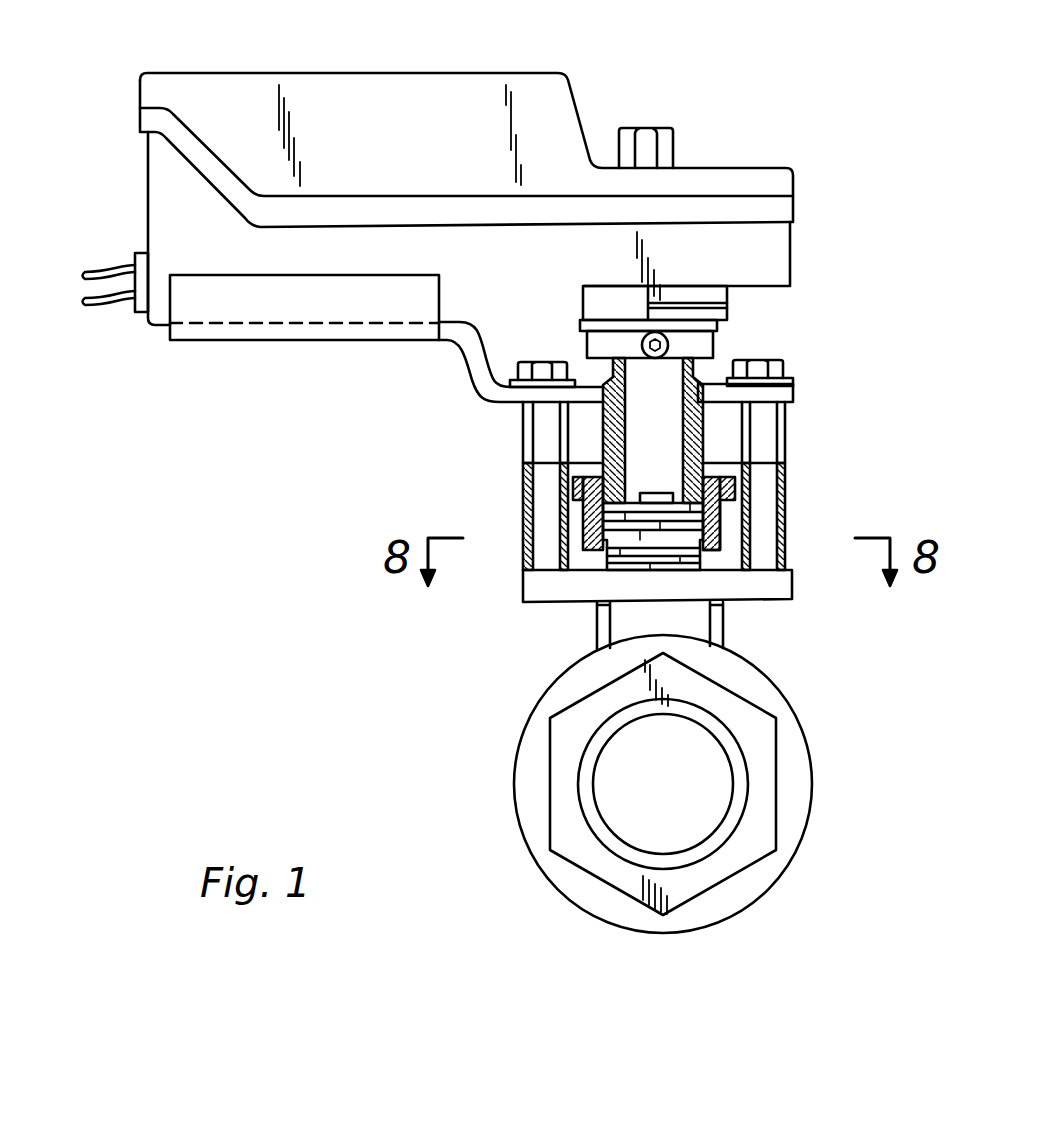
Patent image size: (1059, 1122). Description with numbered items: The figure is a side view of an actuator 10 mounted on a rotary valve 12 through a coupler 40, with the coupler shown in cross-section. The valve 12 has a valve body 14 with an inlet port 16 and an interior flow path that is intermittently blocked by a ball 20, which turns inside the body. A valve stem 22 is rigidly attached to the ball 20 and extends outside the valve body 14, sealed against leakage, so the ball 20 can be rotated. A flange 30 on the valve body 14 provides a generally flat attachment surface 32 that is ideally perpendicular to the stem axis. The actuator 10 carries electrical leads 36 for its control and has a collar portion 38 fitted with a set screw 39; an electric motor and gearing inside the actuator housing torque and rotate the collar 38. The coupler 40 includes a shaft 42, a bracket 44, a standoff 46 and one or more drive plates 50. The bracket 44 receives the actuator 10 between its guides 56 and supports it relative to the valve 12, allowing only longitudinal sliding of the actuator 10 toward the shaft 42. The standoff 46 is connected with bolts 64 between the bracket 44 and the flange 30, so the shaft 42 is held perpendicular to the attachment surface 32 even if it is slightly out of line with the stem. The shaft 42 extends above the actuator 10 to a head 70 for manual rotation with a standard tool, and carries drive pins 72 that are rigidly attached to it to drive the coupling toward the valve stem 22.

The actuator 10 is at (263, 74).
The valve 12 is at (629, 767).
The valve body 14 is at (527, 777).
The inlet port 16 is at (575, 836).
The ball 20 is at (680, 707).
The valve stem 22 is at (653, 493).
The flange 30 is at (780, 585).
The attachment surface 32 is at (732, 560).
The electrical leads 36 is at (86, 296).
The collar portion 38 is at (700, 342).
The set screw 39 is at (666, 334).
The coupler 40 is at (495, 472).
The shaft 42 is at (690, 373).
The bracket 44 is at (193, 333).
The standoff 46 is at (765, 427).
The drive plate 50 is at (610, 553).
The guides 56 is at (323, 302).
The bolts 64 is at (541, 362).
The head 70 is at (650, 138).
The drive pins 72 is at (585, 548).